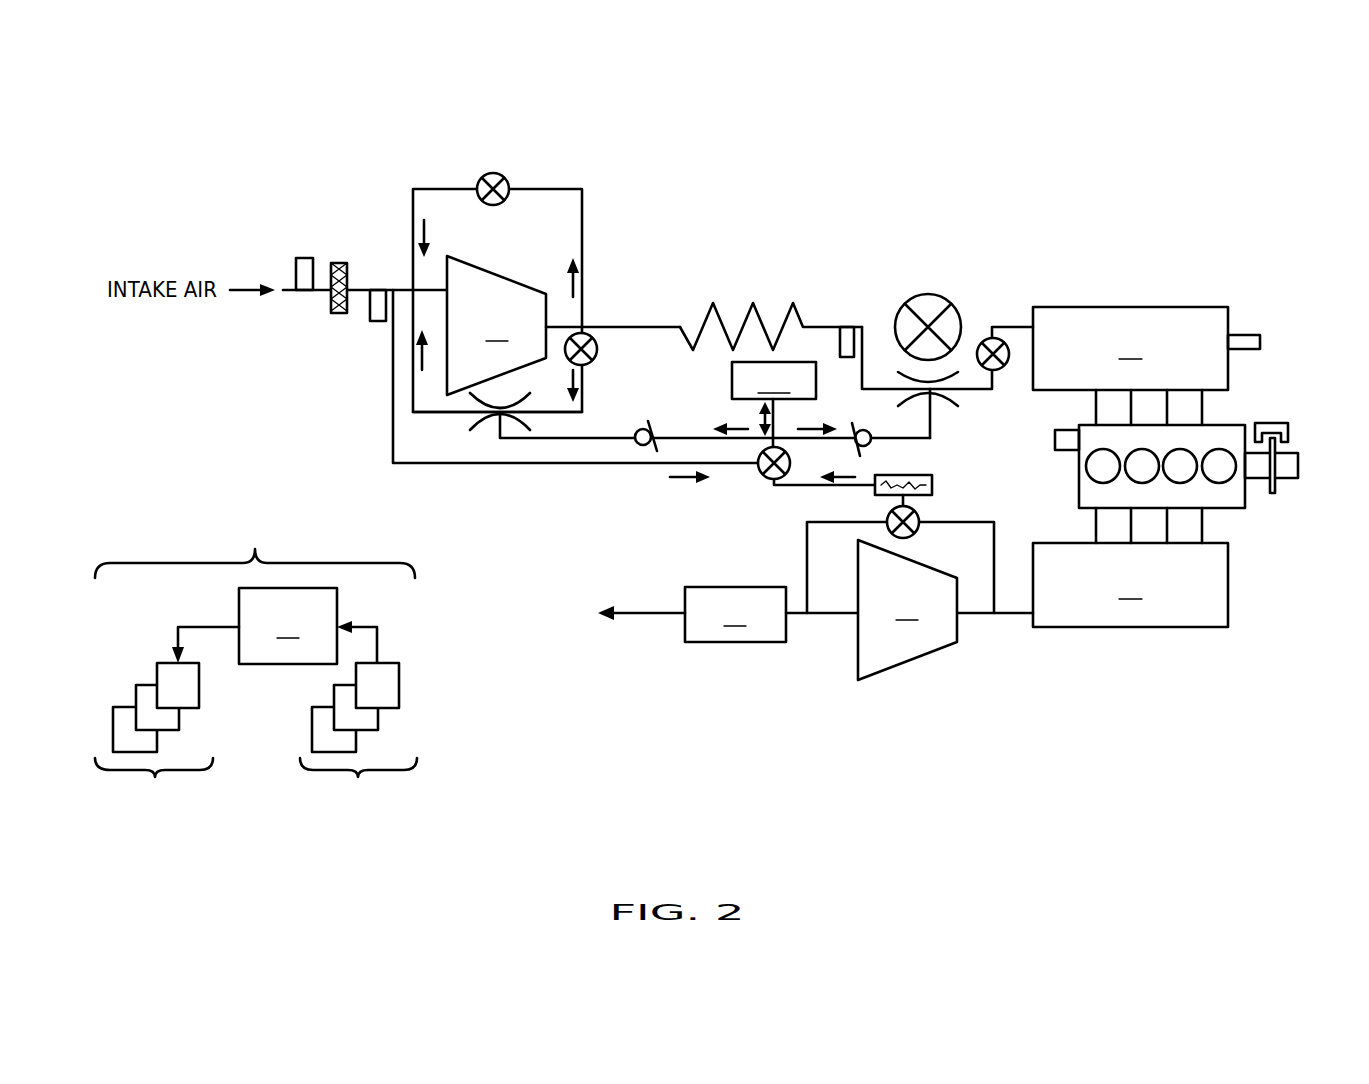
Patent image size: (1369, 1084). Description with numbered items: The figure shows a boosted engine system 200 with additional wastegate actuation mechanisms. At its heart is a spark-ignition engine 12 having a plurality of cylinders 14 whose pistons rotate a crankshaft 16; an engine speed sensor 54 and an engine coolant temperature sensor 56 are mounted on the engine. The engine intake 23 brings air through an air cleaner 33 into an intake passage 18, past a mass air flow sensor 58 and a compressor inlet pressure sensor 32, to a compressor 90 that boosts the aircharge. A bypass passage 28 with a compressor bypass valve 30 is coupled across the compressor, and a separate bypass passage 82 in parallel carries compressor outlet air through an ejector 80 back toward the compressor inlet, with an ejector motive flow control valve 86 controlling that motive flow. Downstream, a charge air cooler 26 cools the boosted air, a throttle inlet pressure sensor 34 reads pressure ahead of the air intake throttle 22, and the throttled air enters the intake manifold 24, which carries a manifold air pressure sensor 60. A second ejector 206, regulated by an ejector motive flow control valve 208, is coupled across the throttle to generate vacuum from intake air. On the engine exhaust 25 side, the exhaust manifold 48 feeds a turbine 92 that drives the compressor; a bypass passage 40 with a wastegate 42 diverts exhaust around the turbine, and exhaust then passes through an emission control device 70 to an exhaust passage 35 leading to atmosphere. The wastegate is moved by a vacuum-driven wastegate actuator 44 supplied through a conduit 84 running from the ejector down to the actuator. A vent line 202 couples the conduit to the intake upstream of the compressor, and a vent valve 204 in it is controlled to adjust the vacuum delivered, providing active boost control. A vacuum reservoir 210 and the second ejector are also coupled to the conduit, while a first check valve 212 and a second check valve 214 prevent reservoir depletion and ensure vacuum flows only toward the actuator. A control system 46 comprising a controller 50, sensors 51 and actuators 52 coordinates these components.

The engine system 200 is at (228, 118).
The engine 12 is at (1218, 515).
The cylinders 14 is at (1100, 483).
The crankshaft 16 is at (1290, 478).
The intake passage 18 is at (634, 310).
The air intake throttle 22 is at (922, 294).
The engine intake 23 is at (878, 255).
The engine intake manifold 24 is at (1130, 366).
The engine exhaust 25 is at (1000, 672).
The charge air cooler 26 is at (790, 305).
The bypass passage 28 is at (413, 189).
The compressor bypass valve 30 is at (493, 173).
The compressor inlet pressure sensor 32 is at (378, 321).
The air cleaner 33 is at (339, 313).
The throttle inlet pressure sensor 34 is at (840, 345).
The exhaust passage 35 is at (655, 614).
The bypass passage 40 is at (975, 522).
The wastegate 42 is at (912, 512).
The wastegate actuator 44 is at (917, 475).
The control system 46 is at (255, 532).
The exhaust manifold 48 is at (1130, 585).
The controller 50 is at (274, 626).
The sensors 51 is at (358, 756).
The actuators 52 is at (165, 757).
The engine speed sensor 54 is at (1275, 423).
The engine coolant temperature sensor 56 is at (1055, 443).
The mass air flow sensor 58 is at (305, 258).
The manifold air pressure sensor 60 is at (1260, 342).
The emission control device 70 is at (735, 614).
The ejector 80 is at (530, 428).
The bypass passage 82 is at (430, 412).
The conduit 84 is at (585, 438).
The ejector motive flow control valve 86 is at (597, 349).
The compressor 90 is at (496, 332).
The turbine 92 is at (909, 610).
The vent line 202 is at (560, 463).
The vent valve 204 is at (790, 460).
The second ejector 206 is at (958, 406).
The ejector motive flow control valve 208 is at (993, 338).
The vacuum reservoir 210 is at (774, 404).
The first check valve 212 is at (657, 432).
The second check valve 214 is at (870, 432).